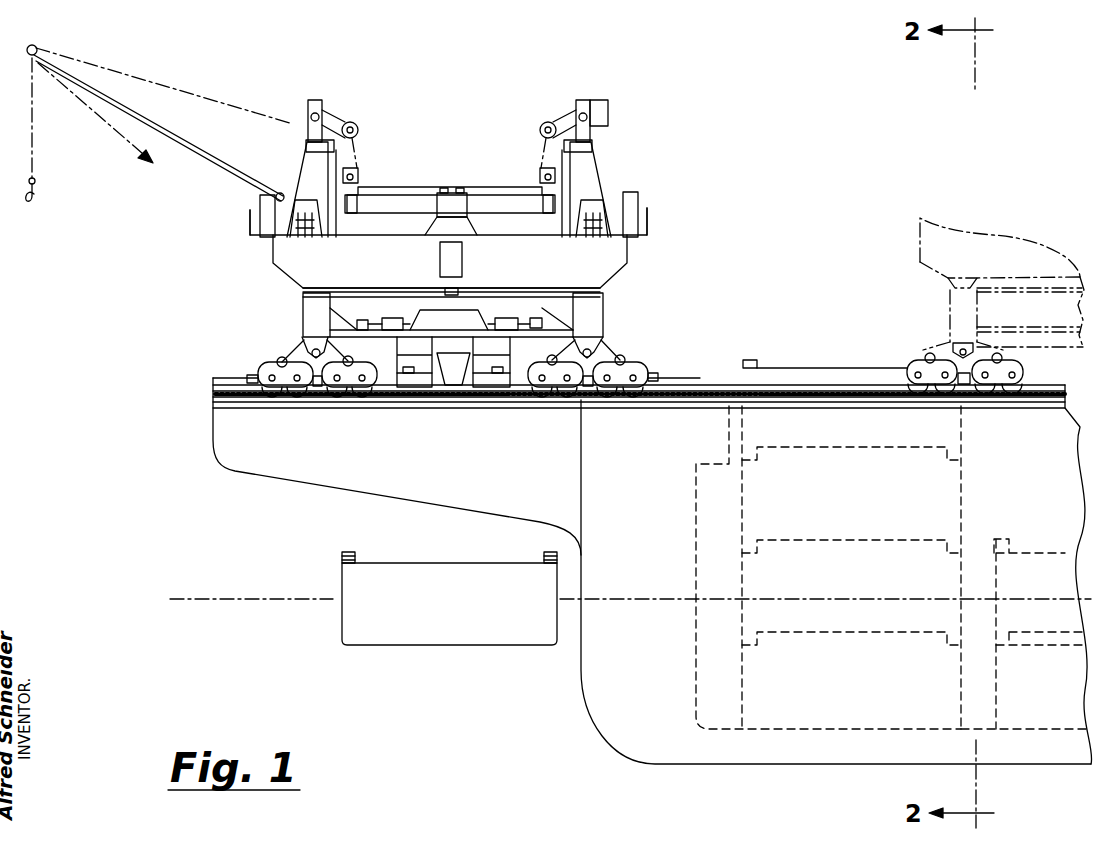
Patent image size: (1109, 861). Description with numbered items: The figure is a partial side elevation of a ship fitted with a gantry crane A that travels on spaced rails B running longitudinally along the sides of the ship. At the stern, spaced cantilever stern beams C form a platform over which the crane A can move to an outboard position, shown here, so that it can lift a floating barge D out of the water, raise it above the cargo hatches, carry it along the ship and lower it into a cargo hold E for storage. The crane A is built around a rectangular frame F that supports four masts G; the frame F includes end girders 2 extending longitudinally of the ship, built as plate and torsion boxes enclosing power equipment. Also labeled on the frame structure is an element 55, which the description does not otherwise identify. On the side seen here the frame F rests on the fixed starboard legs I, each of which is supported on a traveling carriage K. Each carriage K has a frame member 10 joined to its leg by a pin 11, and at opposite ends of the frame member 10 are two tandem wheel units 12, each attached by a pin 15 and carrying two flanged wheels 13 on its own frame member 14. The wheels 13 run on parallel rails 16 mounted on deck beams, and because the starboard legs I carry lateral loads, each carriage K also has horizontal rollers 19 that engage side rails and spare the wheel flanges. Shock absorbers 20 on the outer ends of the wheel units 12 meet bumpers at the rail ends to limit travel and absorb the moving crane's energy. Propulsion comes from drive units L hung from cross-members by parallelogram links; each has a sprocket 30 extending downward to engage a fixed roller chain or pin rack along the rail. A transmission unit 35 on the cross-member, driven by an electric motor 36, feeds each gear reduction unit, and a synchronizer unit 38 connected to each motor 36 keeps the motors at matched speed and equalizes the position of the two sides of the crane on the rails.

The end girders 2 is at (278, 275).
The frame member 10 is at (302, 350).
The pin 11 is at (314, 352).
The tandem wheel units 12 is at (263, 372).
The flanged wheels 13 is at (297, 390).
The frame member 14 is at (248, 376).
The pin 15 is at (280, 358).
The parallel rails 16 is at (730, 370).
The horizontal rollers 19 is at (318, 388).
The shock absorbers 20 is at (252, 392).
The sprockets 30 is at (410, 390).
The transmission unit 35 is at (480, 310).
The electric motor 36 is at (392, 318).
The synchronizer unit 38 is at (368, 318).
The crane post 55 is at (273, 245).
The gantry crane A is at (648, 132).
The rails B is at (692, 380).
The cantilever stern beams C is at (652, 571).
The floating barge D is at (500, 230).
The cargo hold E is at (891, 567).
The frame F is at (451, 272).
The masts G is at (448, 168).
The starboard legs I is at (453, 315).
The traveling carriages K is at (276, 344).
The drive units L is at (423, 383).